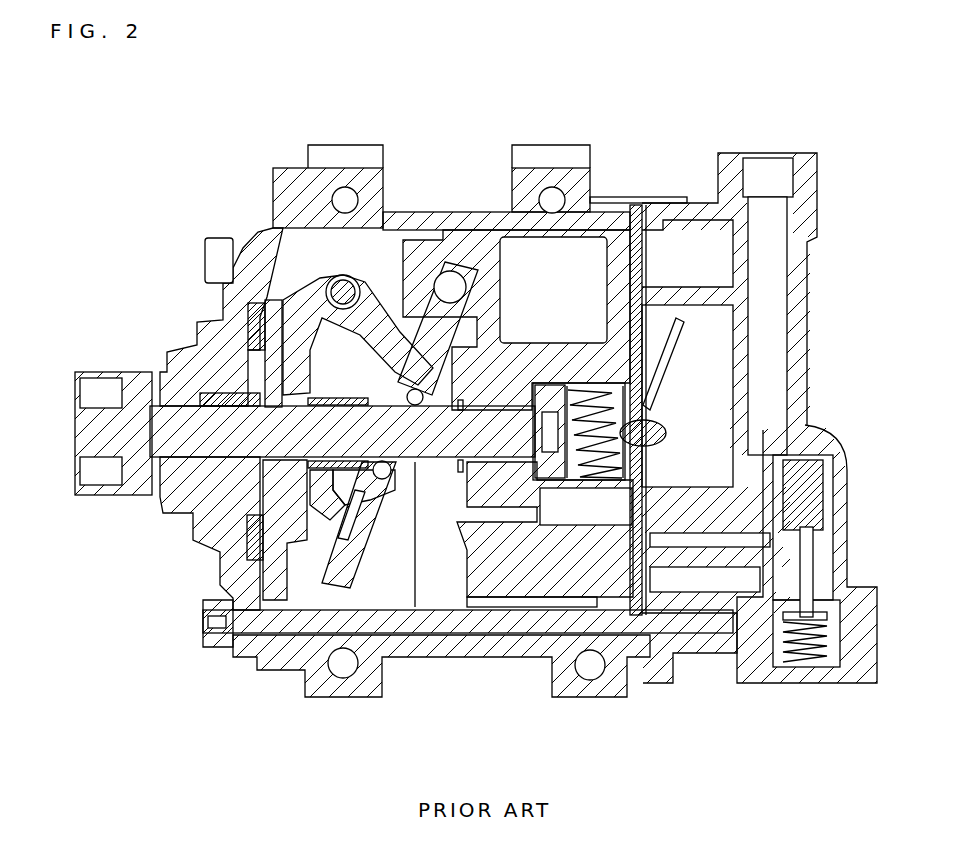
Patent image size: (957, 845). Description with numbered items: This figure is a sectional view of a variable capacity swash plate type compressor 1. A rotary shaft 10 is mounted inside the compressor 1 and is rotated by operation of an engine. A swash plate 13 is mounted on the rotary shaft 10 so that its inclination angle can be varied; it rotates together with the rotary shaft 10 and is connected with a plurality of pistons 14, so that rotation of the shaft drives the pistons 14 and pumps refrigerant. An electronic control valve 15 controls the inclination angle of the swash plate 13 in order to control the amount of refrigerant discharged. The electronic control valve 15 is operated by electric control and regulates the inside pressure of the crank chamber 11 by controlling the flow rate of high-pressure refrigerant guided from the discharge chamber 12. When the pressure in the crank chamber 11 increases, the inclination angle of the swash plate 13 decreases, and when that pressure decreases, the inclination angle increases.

The compressor 1 is at (176, 186).
The rotary shaft 10 is at (176, 428).
The crank chamber 11 is at (394, 586).
The discharge chamber 12 is at (708, 446).
The swash plate 13 is at (340, 582).
The piston 14 is at (461, 247).
The electronic control valve (ECV) 15 is at (810, 660).